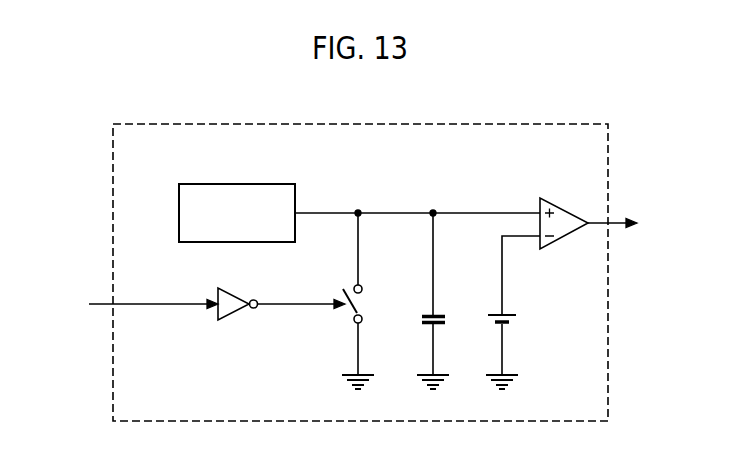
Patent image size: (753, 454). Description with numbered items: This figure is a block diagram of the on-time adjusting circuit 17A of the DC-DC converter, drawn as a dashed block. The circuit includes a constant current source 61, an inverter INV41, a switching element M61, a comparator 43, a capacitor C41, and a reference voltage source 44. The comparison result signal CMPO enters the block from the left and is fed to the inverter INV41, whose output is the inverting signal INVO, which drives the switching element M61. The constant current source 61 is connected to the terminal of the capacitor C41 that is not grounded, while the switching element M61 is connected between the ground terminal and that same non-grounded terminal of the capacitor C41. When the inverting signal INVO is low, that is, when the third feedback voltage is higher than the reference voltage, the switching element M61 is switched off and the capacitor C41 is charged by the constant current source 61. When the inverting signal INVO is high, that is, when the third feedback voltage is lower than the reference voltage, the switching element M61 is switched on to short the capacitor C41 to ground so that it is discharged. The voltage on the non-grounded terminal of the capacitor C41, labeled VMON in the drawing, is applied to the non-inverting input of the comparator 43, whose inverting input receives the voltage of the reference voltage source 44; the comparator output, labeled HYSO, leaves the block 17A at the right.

The on-time adjusting circuit 17A is at (558, 123).
The constant current source 61 is at (273, 184).
The comparator 43 is at (560, 208).
The reference voltage source 44 is at (508, 314).
The switching element M61 is at (371, 302).
The capacitor C41 is at (440, 314).
The inverter INV41 is at (237, 320).
The inverting signal INVO is at (301, 288).
The monitor voltage node VMON is at (481, 197).
The comparison result signal CMPO is at (127, 305).
The hysteresis output signal HYSO is at (636, 224).